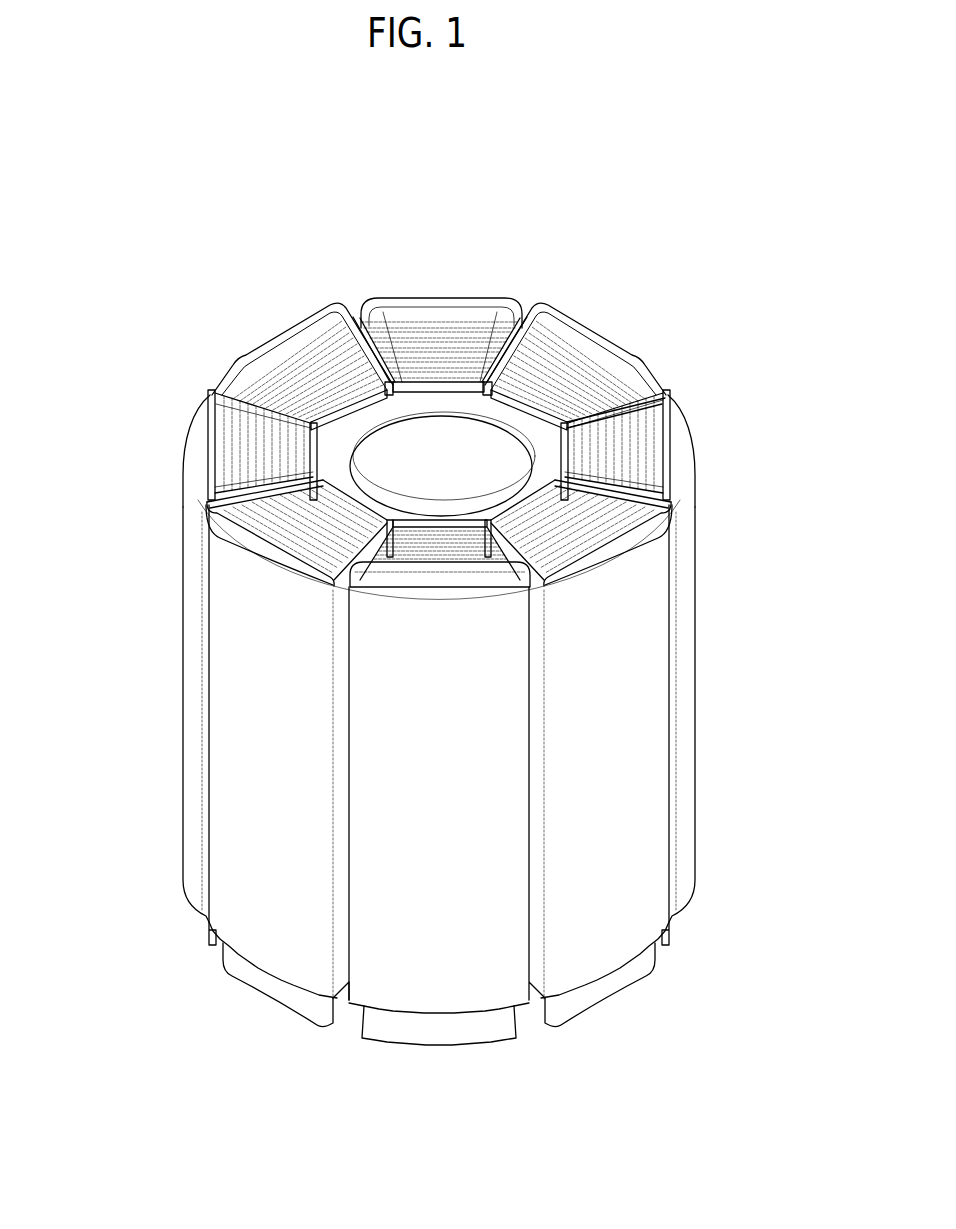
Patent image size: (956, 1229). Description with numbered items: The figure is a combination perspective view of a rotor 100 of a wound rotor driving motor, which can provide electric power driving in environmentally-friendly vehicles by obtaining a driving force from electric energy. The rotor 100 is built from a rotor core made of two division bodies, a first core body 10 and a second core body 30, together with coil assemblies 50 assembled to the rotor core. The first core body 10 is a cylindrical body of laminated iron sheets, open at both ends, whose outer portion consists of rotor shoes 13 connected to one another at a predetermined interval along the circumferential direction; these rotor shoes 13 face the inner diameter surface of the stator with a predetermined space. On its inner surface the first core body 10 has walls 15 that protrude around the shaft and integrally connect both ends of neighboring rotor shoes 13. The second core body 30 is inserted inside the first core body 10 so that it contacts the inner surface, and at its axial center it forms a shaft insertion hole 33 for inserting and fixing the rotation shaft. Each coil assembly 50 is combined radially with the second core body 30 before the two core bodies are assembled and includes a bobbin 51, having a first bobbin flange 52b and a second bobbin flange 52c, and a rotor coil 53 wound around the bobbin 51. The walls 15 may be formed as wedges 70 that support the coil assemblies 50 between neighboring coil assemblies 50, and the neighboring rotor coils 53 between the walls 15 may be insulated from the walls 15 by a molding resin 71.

The rotor 100 is at (457, 169).
The first core body 10 is at (456, 720).
The rotor shoe 13 is at (627, 747).
The wall 15 is at (350, 590).
The second core body 30 is at (559, 374).
The shaft insertion hole 33 is at (455, 470).
The coil assembly 50 is at (410, 435).
The bobbin 51 is at (227, 488).
The first bobbin flange 52b is at (343, 468).
The second bobbin flange 52c is at (257, 521).
The rotor coil 53 is at (350, 347).
The wedge 70 is at (435, 586).
The molding resin 71 is at (352, 598).